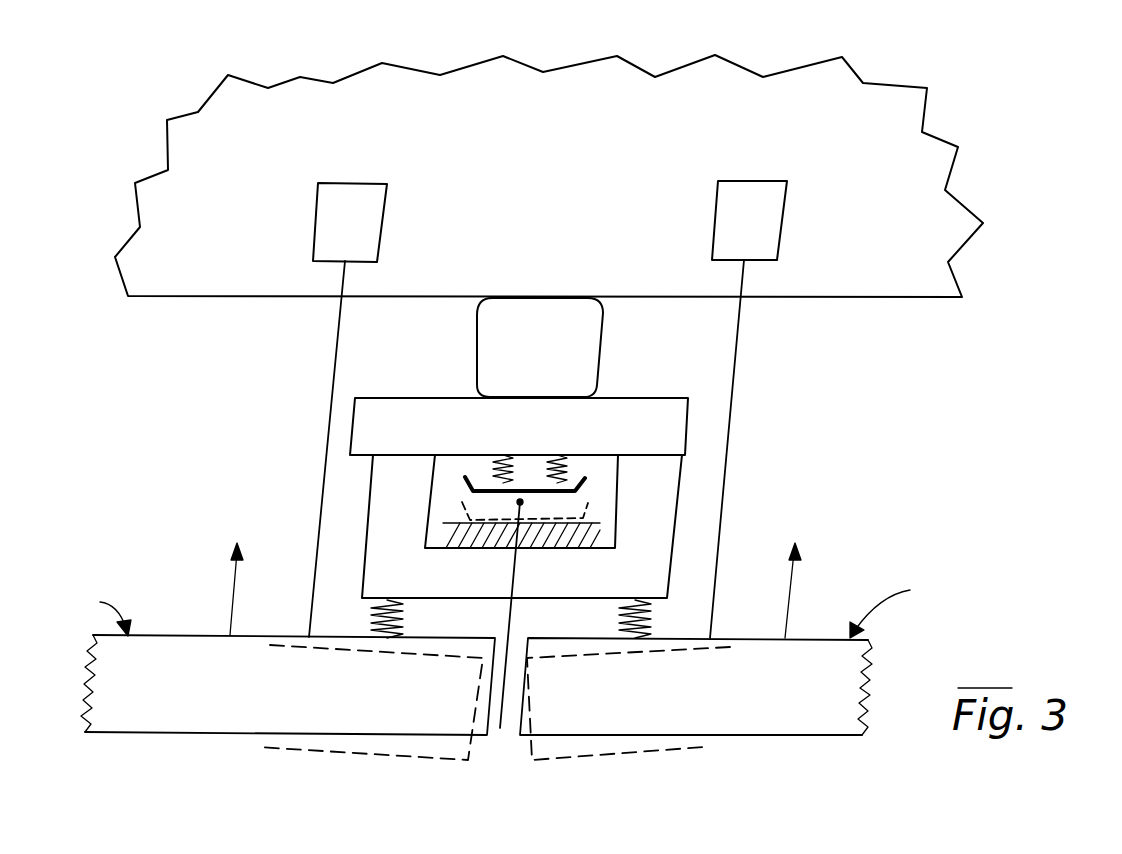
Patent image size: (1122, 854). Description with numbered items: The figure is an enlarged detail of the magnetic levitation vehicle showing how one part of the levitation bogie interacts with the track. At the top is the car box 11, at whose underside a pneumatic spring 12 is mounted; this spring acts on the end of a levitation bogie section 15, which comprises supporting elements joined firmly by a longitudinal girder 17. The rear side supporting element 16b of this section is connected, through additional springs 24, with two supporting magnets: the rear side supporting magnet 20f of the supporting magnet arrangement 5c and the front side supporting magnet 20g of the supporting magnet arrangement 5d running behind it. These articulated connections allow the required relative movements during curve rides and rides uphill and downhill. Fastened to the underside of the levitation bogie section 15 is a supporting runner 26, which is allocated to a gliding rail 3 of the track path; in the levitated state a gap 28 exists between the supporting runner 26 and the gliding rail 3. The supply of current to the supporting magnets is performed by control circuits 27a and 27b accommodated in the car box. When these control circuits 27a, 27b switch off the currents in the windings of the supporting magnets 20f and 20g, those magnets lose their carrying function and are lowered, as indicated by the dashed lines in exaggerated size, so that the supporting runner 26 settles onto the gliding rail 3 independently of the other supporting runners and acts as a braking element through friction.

The car box 11 is at (950, 167).
The control circuit 27a is at (327, 225).
The control circuit 27b is at (760, 238).
The pneumatic spring 12 is at (578, 348).
The longitudinal girder 17 is at (635, 407).
The levitation bogie section 15 is at (680, 482).
The rear side supporting element 16b is at (605, 473).
The supporting runner 26 is at (472, 484).
The gliding rail 3 is at (443, 532).
The gap 28 is at (500, 728).
The spring 24 is at (647, 620).
The rear side supporting magnet 20f is at (208, 702).
The front side supporting magnet 20g is at (763, 713).
The supporting magnet arrangement 5c is at (90, 602).
The supporting magnet arrangement 5d is at (910, 598).